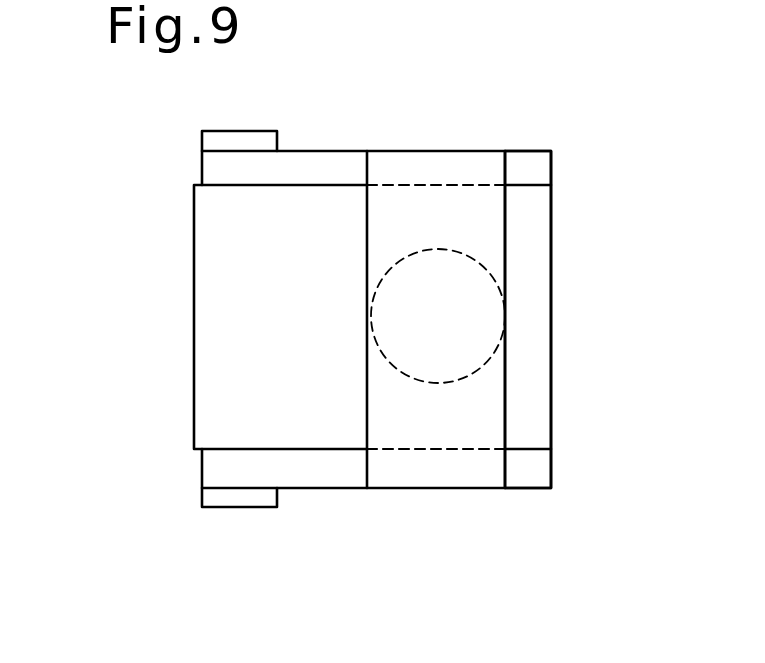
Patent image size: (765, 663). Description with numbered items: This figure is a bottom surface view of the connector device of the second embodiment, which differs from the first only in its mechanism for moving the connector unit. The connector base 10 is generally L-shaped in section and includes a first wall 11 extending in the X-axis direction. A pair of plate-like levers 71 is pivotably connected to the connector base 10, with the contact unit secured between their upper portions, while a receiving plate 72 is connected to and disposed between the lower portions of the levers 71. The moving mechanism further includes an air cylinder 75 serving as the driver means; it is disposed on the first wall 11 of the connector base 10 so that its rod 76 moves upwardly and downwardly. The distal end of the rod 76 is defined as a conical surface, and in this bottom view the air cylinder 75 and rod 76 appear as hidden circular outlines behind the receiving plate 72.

The connector base 10 is at (186, 315).
The first wall 11 is at (540, 374).
The plate-like levers 71 is at (335, 151).
The receiving plate 72 is at (507, 265).
The air cylinder 75 is at (466, 251).
The rod 76 is at (465, 318).